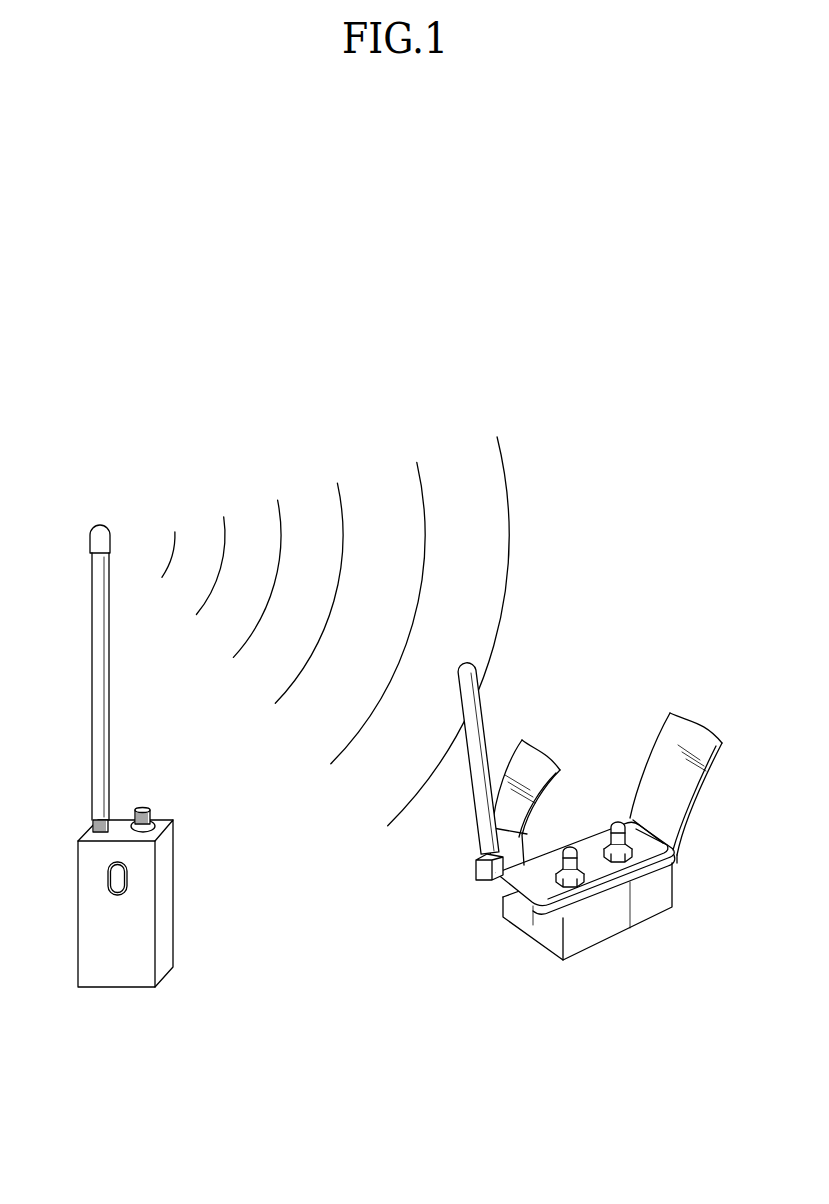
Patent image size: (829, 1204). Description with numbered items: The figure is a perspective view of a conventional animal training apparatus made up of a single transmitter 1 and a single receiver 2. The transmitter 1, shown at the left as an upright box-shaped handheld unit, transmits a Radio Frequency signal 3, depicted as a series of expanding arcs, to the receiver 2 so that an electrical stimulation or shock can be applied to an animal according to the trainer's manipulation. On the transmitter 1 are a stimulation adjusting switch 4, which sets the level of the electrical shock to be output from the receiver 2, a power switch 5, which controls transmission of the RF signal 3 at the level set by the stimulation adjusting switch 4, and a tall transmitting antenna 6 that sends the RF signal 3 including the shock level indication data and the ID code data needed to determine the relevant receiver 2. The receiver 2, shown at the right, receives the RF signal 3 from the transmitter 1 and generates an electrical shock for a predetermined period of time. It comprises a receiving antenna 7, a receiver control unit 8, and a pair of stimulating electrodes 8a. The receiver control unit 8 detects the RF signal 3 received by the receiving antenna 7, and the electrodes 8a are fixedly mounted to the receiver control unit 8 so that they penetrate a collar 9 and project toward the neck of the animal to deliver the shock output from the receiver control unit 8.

The transmitter 1 is at (119, 756).
The receiver 2 is at (606, 824).
The Radio Frequency (RF) signal 3 is at (337, 765).
The stimulation adjusting switch 4 is at (148, 811).
The power switch 5 is at (113, 878).
The transmitting antenna 6 is at (98, 710).
The receiving antenna 7 is at (481, 720).
The receiver control unit 8 is at (600, 935).
The stimulating electrodes 8a is at (568, 843).
The collar 9 is at (693, 823).